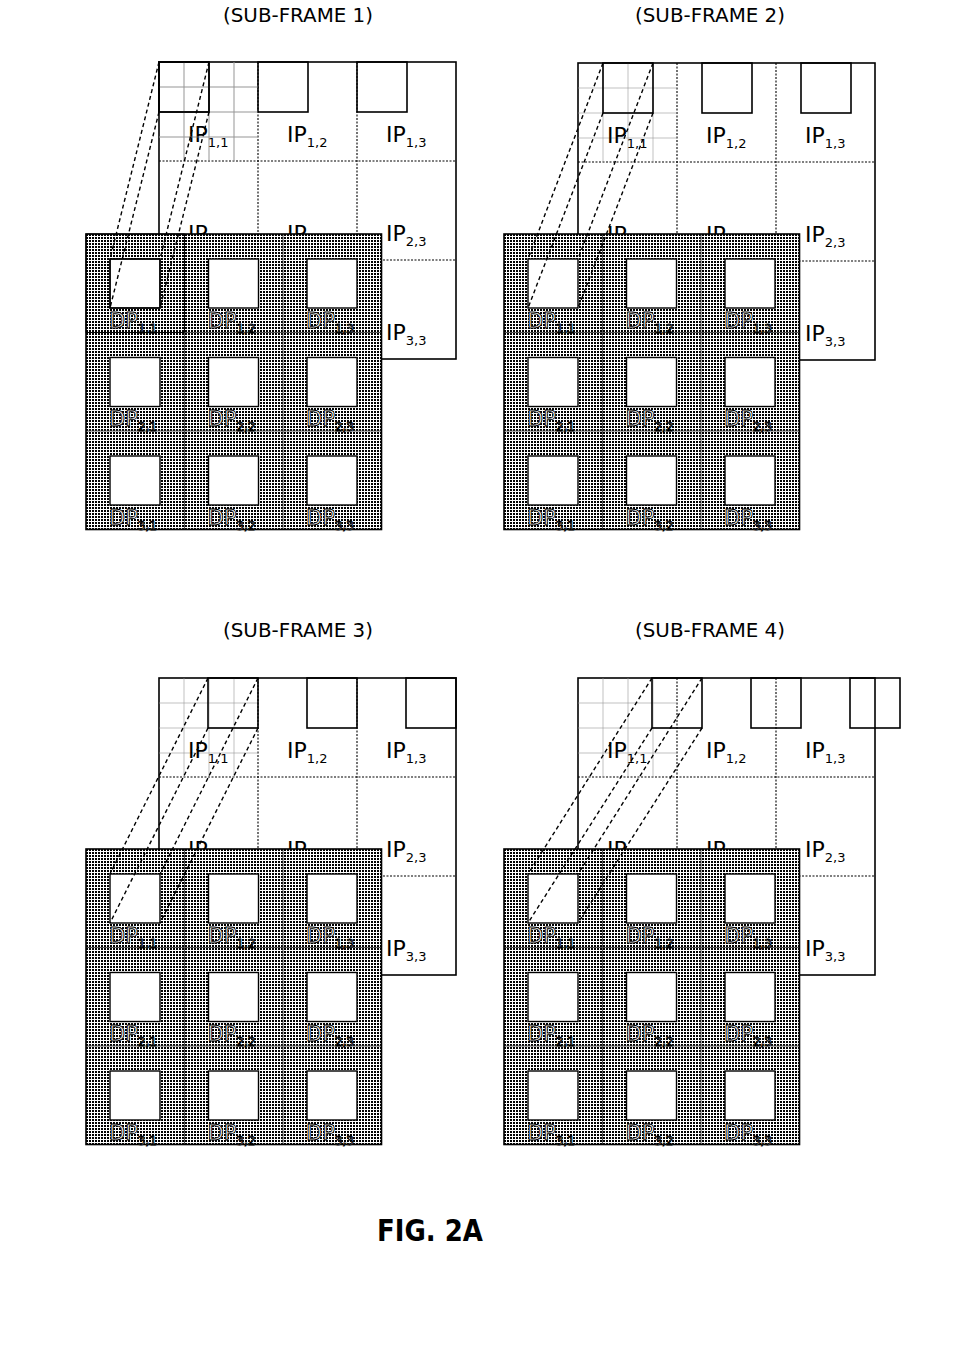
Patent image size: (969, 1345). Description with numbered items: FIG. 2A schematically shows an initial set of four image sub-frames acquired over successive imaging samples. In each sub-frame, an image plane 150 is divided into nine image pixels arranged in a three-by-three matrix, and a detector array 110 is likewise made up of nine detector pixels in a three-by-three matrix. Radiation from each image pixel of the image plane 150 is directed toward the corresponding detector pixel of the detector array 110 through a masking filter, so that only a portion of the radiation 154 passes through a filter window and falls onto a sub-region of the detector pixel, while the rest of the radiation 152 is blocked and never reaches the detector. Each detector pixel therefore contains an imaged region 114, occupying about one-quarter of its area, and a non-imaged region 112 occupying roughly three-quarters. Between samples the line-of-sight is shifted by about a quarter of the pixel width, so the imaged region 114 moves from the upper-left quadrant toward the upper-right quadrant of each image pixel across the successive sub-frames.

The image plane 150 is at (418, 60).
The blocked radiation 152 is at (170, 123).
The passing radiation 154 is at (176, 73).
The detector array 110 is at (109, 233).
The non-imaged region 112 is at (93, 314).
The imaged region 114 is at (125, 268).